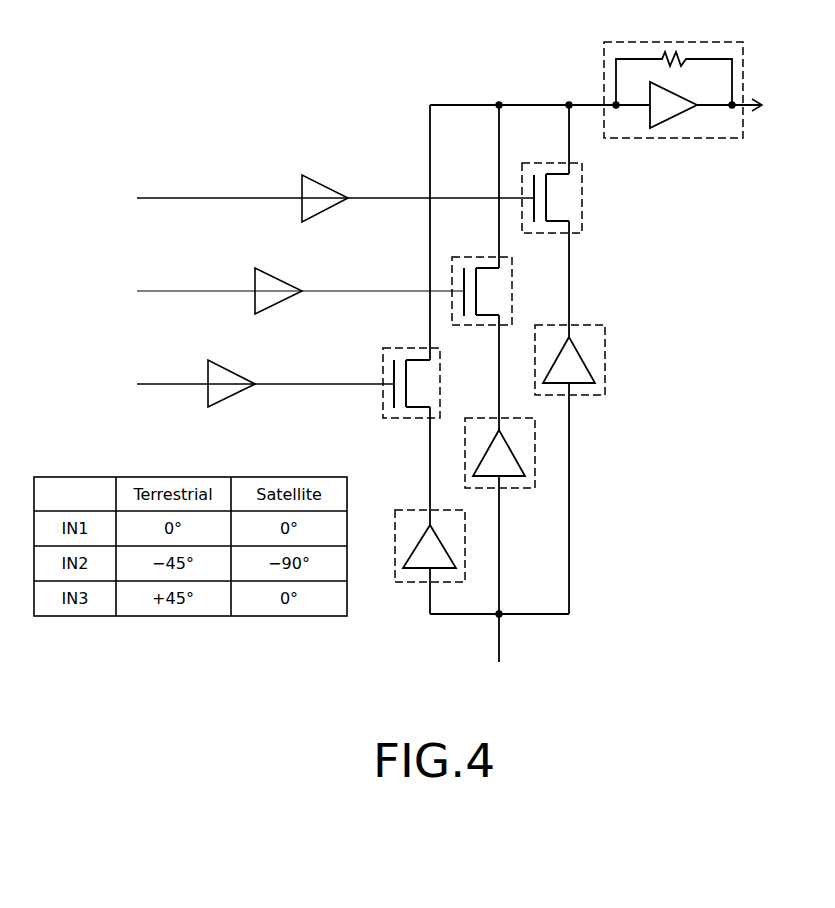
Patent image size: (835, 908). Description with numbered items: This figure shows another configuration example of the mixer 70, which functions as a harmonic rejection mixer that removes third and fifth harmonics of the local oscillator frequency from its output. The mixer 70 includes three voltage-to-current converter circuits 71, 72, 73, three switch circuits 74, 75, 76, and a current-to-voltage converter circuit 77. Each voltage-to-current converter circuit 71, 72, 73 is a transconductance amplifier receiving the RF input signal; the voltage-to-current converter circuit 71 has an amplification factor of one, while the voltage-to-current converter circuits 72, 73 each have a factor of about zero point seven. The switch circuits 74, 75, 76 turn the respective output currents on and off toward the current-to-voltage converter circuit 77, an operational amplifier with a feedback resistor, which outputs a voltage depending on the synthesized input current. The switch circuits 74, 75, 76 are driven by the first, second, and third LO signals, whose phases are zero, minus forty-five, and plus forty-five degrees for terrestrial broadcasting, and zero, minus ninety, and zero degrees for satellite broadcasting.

The mixer 70 is at (343, 58).
The voltage-to-current converter circuit 71 is at (417, 509).
The voltage-to-current converter circuit 72 is at (487, 417).
The voltage-to-current converter circuit 73 is at (556, 324).
The switch circuit 74 is at (406, 347).
The switch circuit 75 is at (479, 256).
The switch circuit 76 is at (547, 162).
The current-to-voltage converter circuit 77 is at (618, 41).